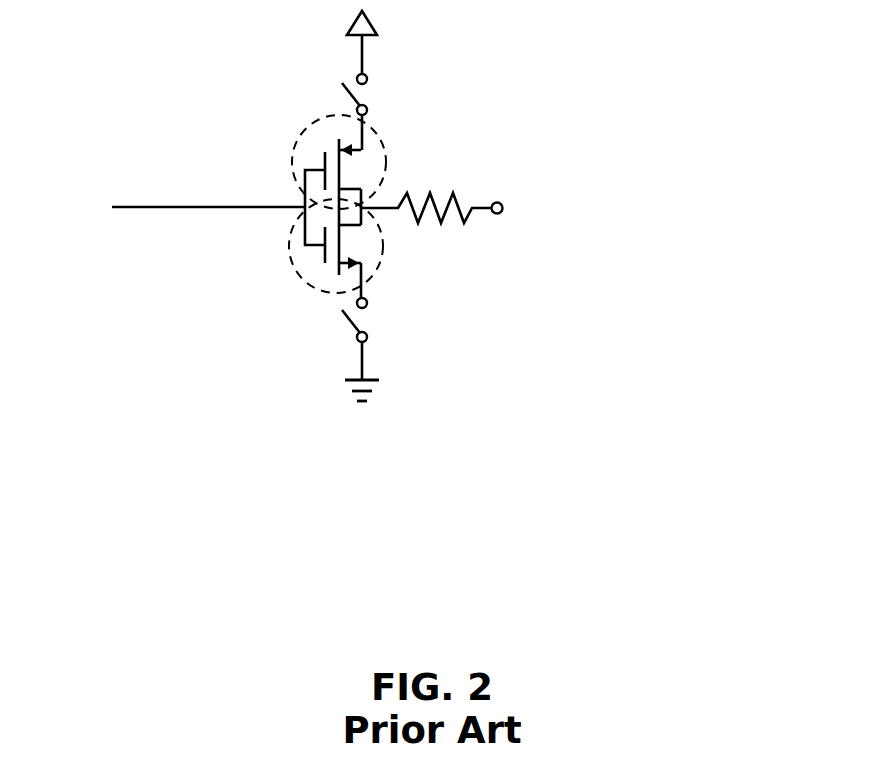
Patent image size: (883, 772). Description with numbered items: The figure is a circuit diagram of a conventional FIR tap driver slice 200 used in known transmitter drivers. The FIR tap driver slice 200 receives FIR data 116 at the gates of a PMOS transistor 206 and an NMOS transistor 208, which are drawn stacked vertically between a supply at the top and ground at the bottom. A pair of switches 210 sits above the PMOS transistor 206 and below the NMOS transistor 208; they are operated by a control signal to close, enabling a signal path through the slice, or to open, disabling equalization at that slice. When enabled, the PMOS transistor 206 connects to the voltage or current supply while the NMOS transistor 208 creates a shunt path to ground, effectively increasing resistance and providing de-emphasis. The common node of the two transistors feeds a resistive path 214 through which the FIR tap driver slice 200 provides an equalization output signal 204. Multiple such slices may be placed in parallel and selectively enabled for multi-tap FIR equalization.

The FIR tap driver slice 200 is at (454, 206).
The equalization output signal 204 is at (517, 220).
The PMOS transistor 206 is at (313, 120).
The NMOS transistor 208 is at (305, 290).
The switches 210 is at (388, 87).
The resistive path 214 is at (450, 181).
The FIR data 116 is at (180, 185).